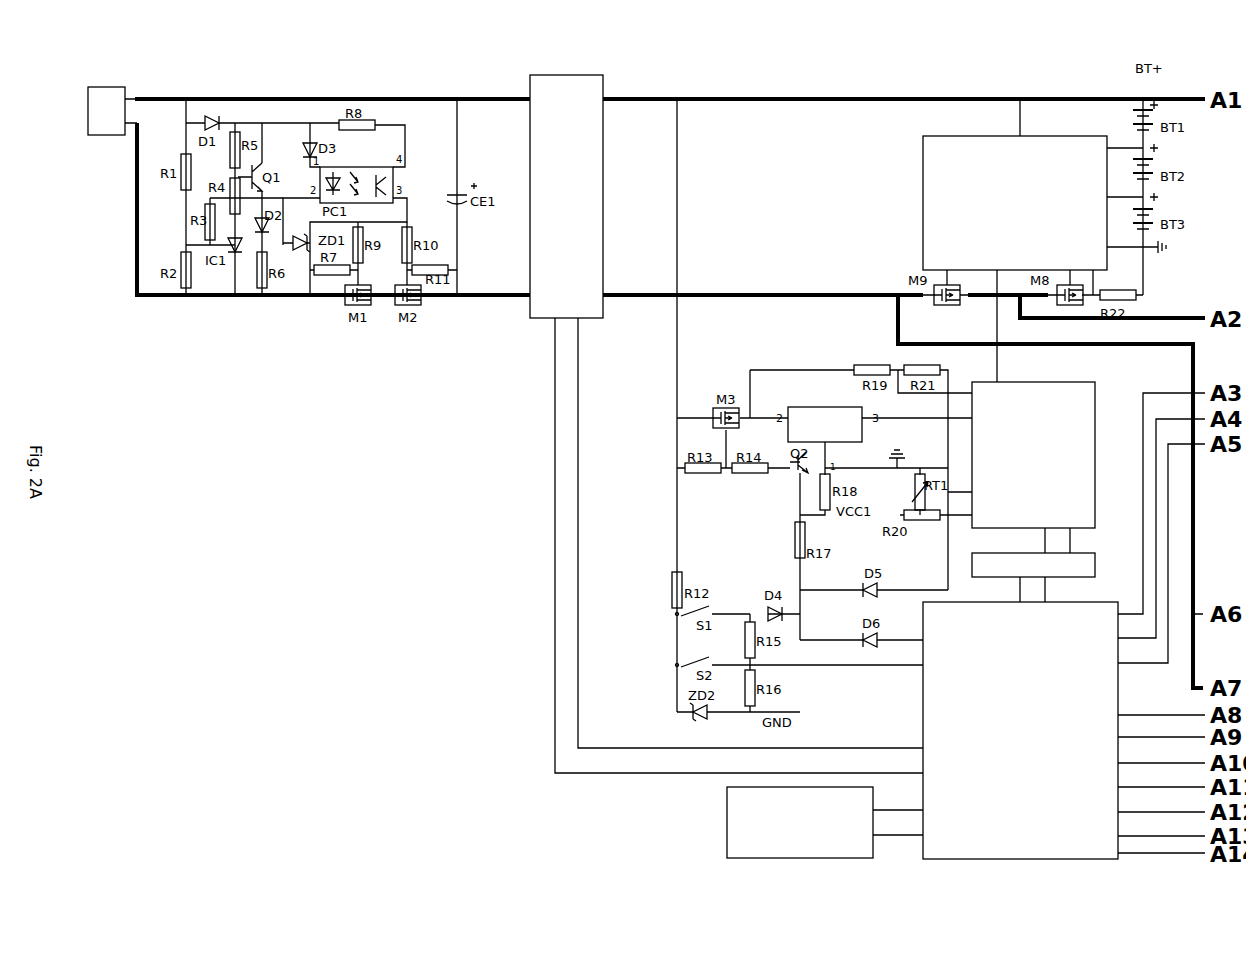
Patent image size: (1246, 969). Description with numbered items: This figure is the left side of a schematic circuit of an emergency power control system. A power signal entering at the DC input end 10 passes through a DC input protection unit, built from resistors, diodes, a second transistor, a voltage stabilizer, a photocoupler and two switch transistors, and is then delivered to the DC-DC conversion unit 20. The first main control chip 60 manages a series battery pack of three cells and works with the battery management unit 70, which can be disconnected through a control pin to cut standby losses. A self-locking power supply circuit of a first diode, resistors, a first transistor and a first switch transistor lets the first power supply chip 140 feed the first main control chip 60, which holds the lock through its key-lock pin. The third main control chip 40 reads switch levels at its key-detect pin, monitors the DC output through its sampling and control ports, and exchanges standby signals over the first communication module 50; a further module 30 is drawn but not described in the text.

The DC input end 10 is at (90, 87).
The DC-DC conversion unit 20 is at (536, 75).
The communication module 30 is at (727, 787).
The third main control chip 40 is at (923, 860).
The first communication module 50 is at (1095, 553).
The first main control chip 60 is at (1095, 382).
The battery management unit 70 is at (923, 136).
The first power supply chip 140 is at (862, 407).